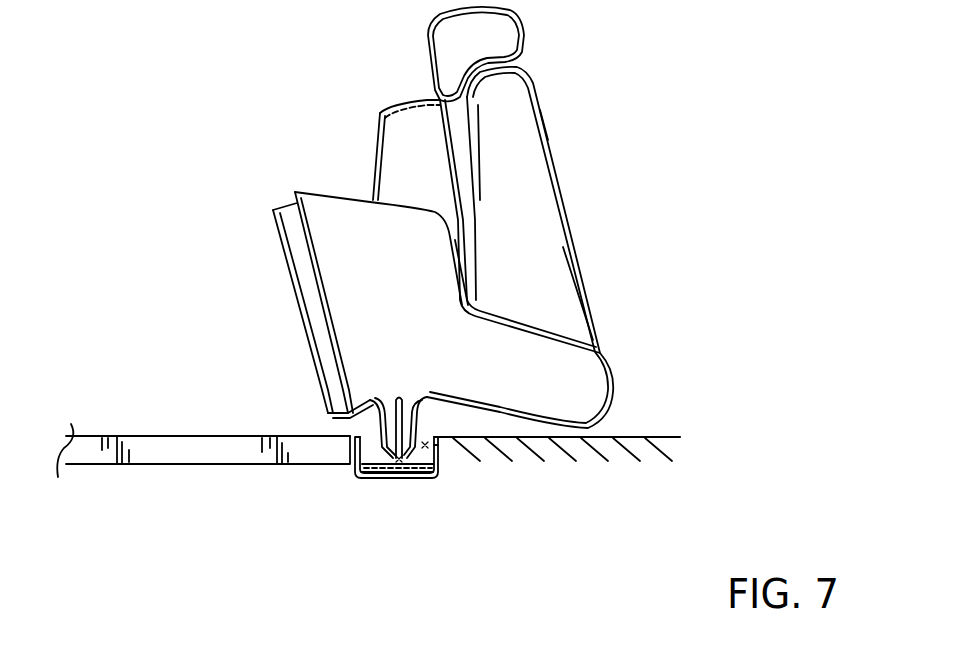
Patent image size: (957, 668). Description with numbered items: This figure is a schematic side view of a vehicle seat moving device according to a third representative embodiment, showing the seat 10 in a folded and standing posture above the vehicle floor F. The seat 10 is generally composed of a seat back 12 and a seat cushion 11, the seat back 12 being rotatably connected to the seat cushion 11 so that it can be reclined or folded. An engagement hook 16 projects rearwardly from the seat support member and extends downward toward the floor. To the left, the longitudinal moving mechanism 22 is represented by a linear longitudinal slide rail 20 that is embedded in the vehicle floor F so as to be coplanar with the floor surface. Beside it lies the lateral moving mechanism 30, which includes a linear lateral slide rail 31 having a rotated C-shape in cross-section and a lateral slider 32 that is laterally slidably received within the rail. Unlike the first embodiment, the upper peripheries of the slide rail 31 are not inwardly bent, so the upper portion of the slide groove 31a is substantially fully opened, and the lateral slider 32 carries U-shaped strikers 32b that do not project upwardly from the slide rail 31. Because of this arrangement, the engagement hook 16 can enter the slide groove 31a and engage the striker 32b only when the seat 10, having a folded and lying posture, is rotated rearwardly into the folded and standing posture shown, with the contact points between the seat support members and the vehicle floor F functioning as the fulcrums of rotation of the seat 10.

The seat 10 is at (558, 152).
The seat cushion 11 is at (400, 137).
The seat back 12 is at (527, 237).
The engagement hook 16 is at (392, 455).
The longitudinal slide rail 20 is at (175, 453).
The longitudinal moving mechanism 22 is at (152, 431).
The lateral moving mechanism 30 is at (362, 492).
The lateral slide rail 31 is at (358, 463).
The slide groove 31a is at (440, 447).
The lateral slider 32 is at (393, 480).
The U-shaped striker 32b is at (415, 480).
The vehicle floor F is at (622, 435).